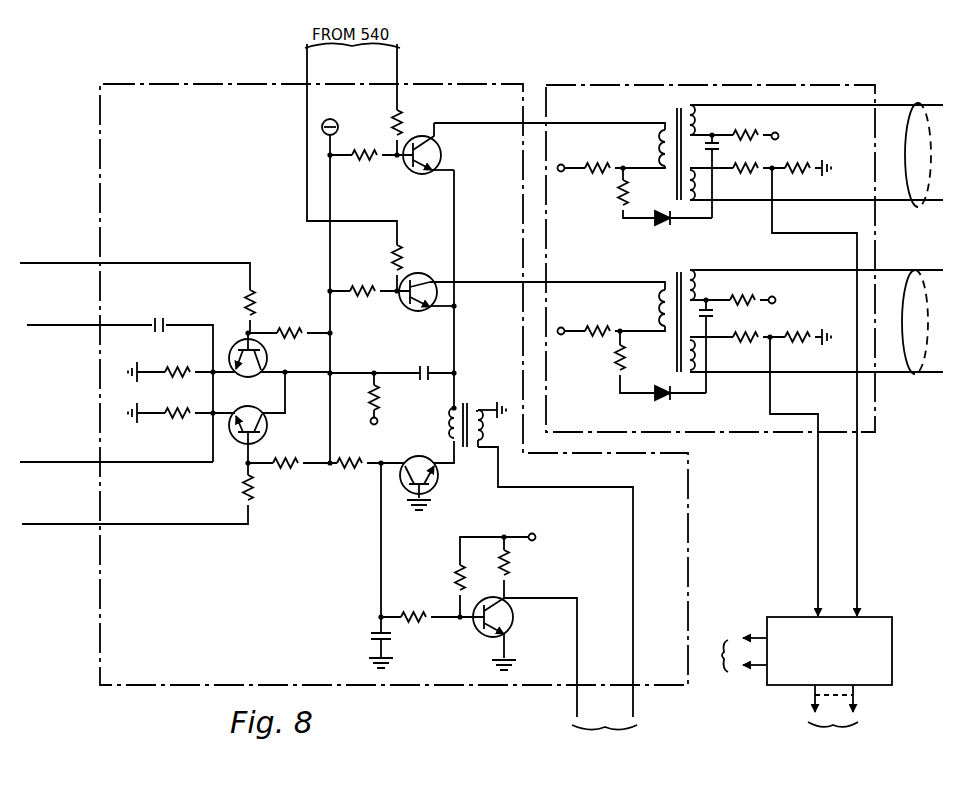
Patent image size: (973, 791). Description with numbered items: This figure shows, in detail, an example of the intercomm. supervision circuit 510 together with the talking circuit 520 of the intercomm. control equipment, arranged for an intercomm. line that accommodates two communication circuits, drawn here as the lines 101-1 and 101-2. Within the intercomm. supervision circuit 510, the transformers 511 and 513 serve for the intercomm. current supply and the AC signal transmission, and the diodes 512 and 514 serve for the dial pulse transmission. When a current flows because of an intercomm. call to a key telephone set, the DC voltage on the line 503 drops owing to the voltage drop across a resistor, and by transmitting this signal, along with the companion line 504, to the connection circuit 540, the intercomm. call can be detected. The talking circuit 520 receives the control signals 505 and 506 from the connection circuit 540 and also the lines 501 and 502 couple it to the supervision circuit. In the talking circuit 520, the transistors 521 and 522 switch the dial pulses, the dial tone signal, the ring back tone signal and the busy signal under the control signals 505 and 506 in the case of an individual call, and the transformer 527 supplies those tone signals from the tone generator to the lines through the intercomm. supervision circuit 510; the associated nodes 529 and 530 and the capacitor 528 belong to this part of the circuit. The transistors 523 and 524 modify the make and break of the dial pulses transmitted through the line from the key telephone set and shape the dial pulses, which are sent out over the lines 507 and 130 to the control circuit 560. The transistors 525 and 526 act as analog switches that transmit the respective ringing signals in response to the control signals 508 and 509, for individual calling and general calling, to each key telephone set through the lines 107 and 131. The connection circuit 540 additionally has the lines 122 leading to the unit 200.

The talking circuit 520 is at (162, 84).
The intercomm. supervision circuit 510 is at (806, 80).
The connection circuit 540 is at (893, 637).
The control signal 505 is at (398, 74).
The control signal 506 is at (307, 66).
The drive line to first transformer 501 is at (590, 123).
The drive line to second transformer 502 is at (571, 282).
The line 503 is at (857, 548).
The signal line to connection circuit 504 is at (814, 549).
The output line to 560 507 is at (574, 709).
The output line to 560 130 is at (638, 708).
The control signal 508 is at (53, 263).
The line 107 is at (54, 326).
The line 131 is at (50, 463).
The control signal 509 is at (53, 524).
The transformer 511 is at (672, 121).
The diode 512 is at (660, 234).
The transformer 513 is at (670, 343).
The diode 514 is at (664, 406).
The transistor 521 is at (444, 157).
The transistor 522 is at (425, 318).
The transistor 523 is at (440, 492).
The transistor 524 is at (518, 623).
The transistor 525 is at (268, 359).
The transistor 526 is at (268, 434).
The transformer 527 is at (467, 404).
The coupling capacitor 528 is at (158, 318).
The bias line 529 is at (351, 372).
The filter line 530 is at (378, 566).
The first telephone line 101-1 is at (917, 100).
The second telephone line 101-2 is at (916, 268).
The lines to 200 122 is at (858, 705).
The control circuit 560 is at (604, 740).
The unit 200 (destination) 200 is at (845, 738).